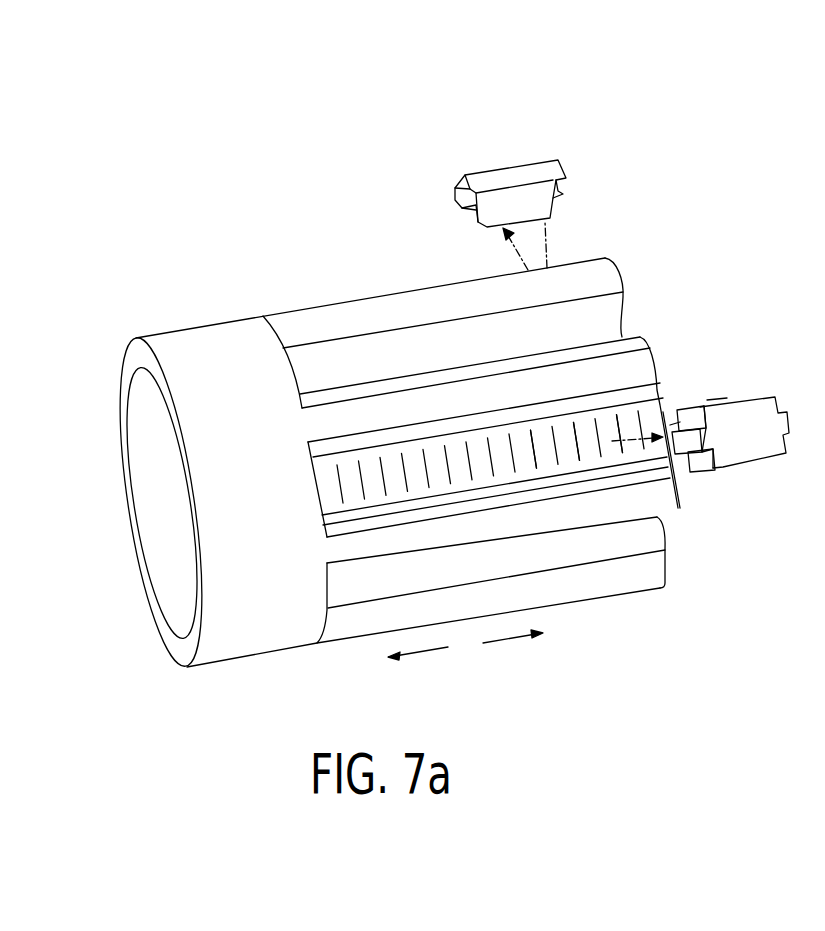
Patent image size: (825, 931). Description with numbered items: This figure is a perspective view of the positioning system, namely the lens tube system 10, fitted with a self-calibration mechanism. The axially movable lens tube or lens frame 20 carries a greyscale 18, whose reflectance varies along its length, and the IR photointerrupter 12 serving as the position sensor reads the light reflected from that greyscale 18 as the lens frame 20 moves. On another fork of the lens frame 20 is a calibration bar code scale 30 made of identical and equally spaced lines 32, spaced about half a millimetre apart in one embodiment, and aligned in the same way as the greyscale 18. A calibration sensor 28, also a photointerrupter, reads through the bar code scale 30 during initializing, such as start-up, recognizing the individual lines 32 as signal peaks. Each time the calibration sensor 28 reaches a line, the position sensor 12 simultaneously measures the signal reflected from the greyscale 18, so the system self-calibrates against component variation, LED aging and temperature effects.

The lens tube system 10 is at (342, 265).
The IR photointerrupter 12 is at (508, 192).
The greyscale 18 is at (540, 270).
The lens frame 20 is at (195, 355).
The calibration sensor 28 is at (730, 397).
The calibration bar code scale 30 is at (512, 473).
The lines 32 is at (530, 437).